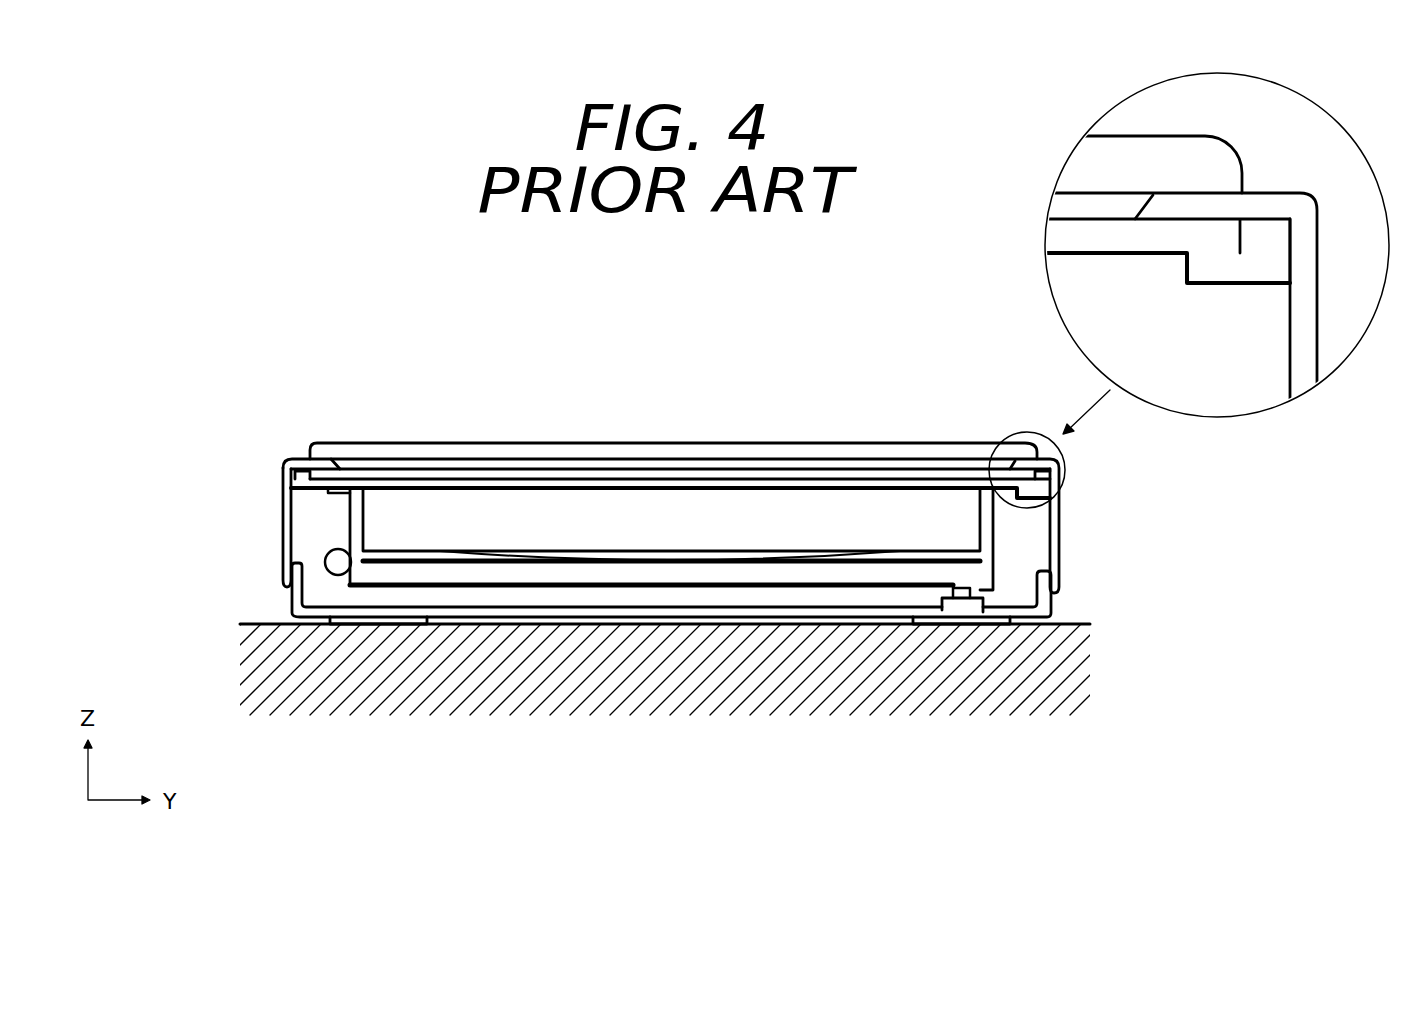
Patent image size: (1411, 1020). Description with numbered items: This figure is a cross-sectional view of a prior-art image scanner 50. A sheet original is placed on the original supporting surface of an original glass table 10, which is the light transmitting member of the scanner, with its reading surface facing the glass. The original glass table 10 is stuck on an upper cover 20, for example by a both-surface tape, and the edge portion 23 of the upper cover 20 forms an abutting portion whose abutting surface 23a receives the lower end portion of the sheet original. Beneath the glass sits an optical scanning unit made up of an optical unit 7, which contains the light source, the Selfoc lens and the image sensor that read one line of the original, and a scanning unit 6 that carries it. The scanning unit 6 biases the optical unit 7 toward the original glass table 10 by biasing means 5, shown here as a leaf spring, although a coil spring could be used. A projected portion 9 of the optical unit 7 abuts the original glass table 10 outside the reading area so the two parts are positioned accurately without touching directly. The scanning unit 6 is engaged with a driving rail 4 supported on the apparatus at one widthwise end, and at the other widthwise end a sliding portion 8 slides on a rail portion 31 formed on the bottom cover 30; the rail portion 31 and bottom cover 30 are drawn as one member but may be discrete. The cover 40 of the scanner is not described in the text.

The image scanner 50 is at (662, 402).
The cover 40 is at (505, 444).
The upper cover 20 is at (284, 482).
The edge portion 23 is at (1280, 205).
The abutting surface 23a is at (1140, 211).
The original glass table 10 is at (1140, 256).
The projected portion 9 is at (363, 482).
The optical unit 7 is at (430, 489).
The biasing means 5 is at (736, 554).
The scanning unit 6 is at (681, 578).
The sliding portion 8 is at (970, 586).
The driving rail 4 is at (332, 560).
The bottom cover 30 is at (1062, 608).
The rail portion 31 is at (965, 604).